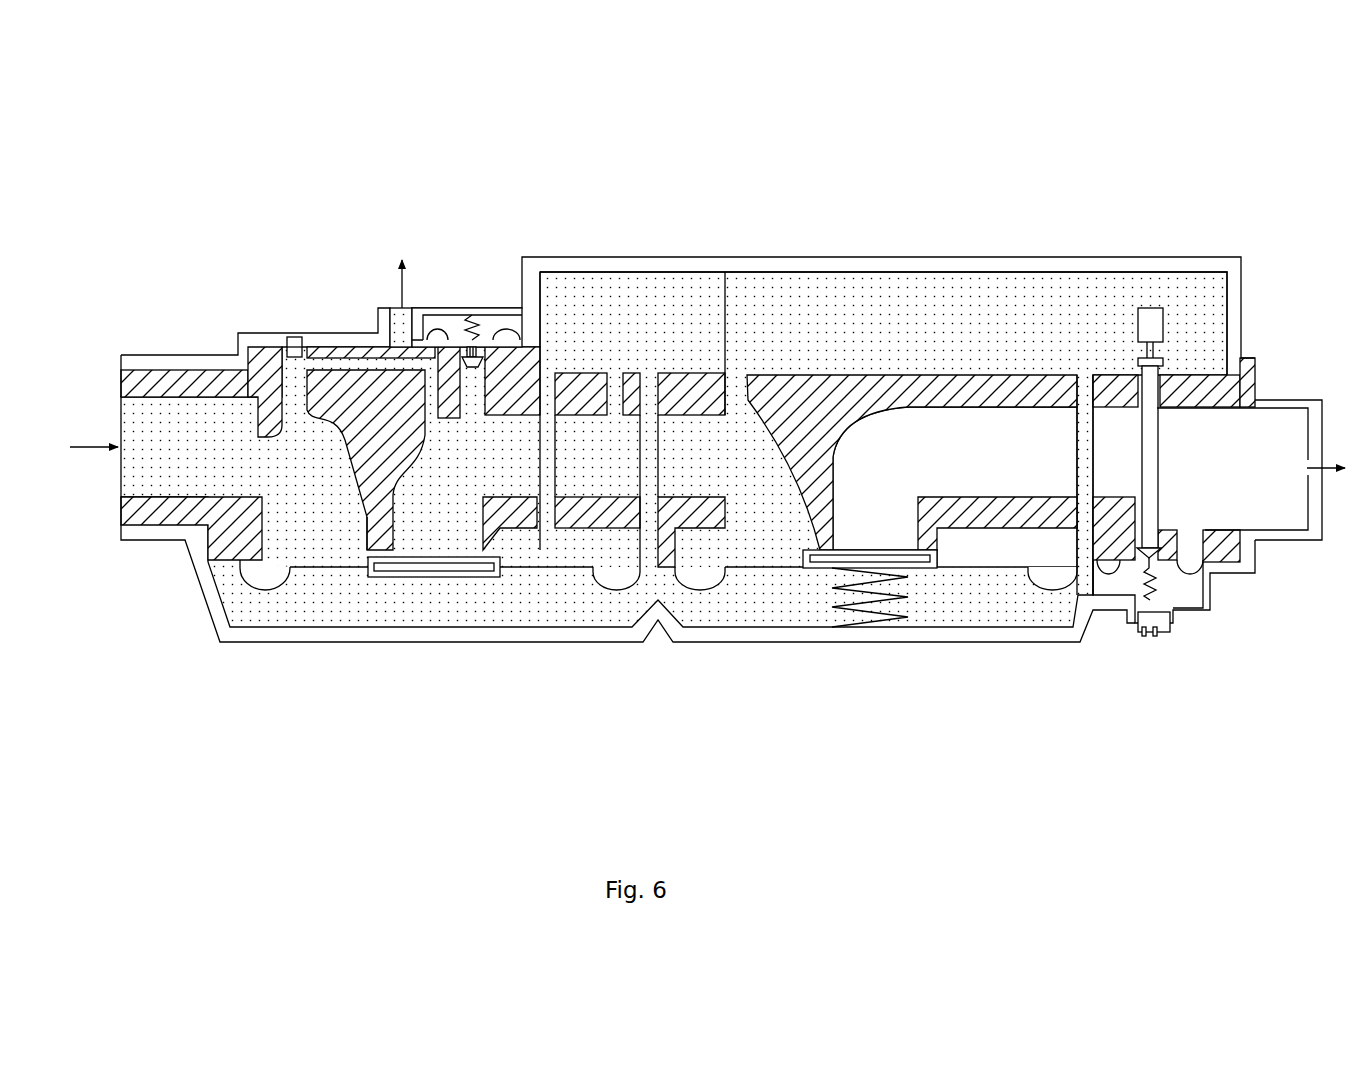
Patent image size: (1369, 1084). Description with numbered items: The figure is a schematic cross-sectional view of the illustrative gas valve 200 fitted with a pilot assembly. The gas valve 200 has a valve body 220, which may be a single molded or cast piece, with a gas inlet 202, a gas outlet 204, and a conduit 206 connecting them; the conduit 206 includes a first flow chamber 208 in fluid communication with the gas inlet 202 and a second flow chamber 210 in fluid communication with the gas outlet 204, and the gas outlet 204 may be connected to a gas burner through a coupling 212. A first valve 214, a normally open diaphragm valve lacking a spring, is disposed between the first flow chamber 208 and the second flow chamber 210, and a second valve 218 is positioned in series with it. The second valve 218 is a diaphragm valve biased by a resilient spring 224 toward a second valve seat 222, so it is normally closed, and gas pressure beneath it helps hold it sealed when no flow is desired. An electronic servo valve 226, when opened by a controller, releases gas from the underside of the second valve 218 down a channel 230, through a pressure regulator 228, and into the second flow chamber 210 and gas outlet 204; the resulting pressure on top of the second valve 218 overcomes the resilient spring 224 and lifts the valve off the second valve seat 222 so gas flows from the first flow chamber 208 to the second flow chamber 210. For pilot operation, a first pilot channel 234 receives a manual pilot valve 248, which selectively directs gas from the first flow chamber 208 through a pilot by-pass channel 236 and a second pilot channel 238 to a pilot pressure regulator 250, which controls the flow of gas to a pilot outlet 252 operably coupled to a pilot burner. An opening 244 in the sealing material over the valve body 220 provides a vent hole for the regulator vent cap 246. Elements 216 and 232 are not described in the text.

The gas valve 200 is at (1195, 165).
The gas inlet 202 is at (130, 471).
The gas outlet 204 is at (1272, 420).
The conduit 206 is at (600, 487).
The first flow chamber 208 is at (305, 490).
The second flow chamber 210 is at (957, 450).
The coupling 212 is at (1285, 538).
The first valve 214 is at (387, 560).
The spool plate 216 is at (400, 555).
The second valve 218 is at (927, 570).
The valve body 220 is at (185, 385).
The second valve seat 222 is at (833, 550).
The resilient spring 224 is at (870, 617).
The electronic servo valve 226 is at (1150, 305).
The pressure regulator 228 is at (1135, 637).
The channel 230 is at (1150, 430).
The housing top wall 232 is at (745, 385).
The first pilot channel 234 is at (285, 352).
The pilot by-pass channel 236 is at (372, 363).
The second pilot channel 238 is at (483, 385).
The opening 244 is at (1153, 635).
The regulator vent cap 246 is at (1163, 627).
The manual pilot valve 248 is at (288, 326).
The pilot pressure regulator 250 is at (478, 283).
The pilot outlet 252 is at (388, 298).